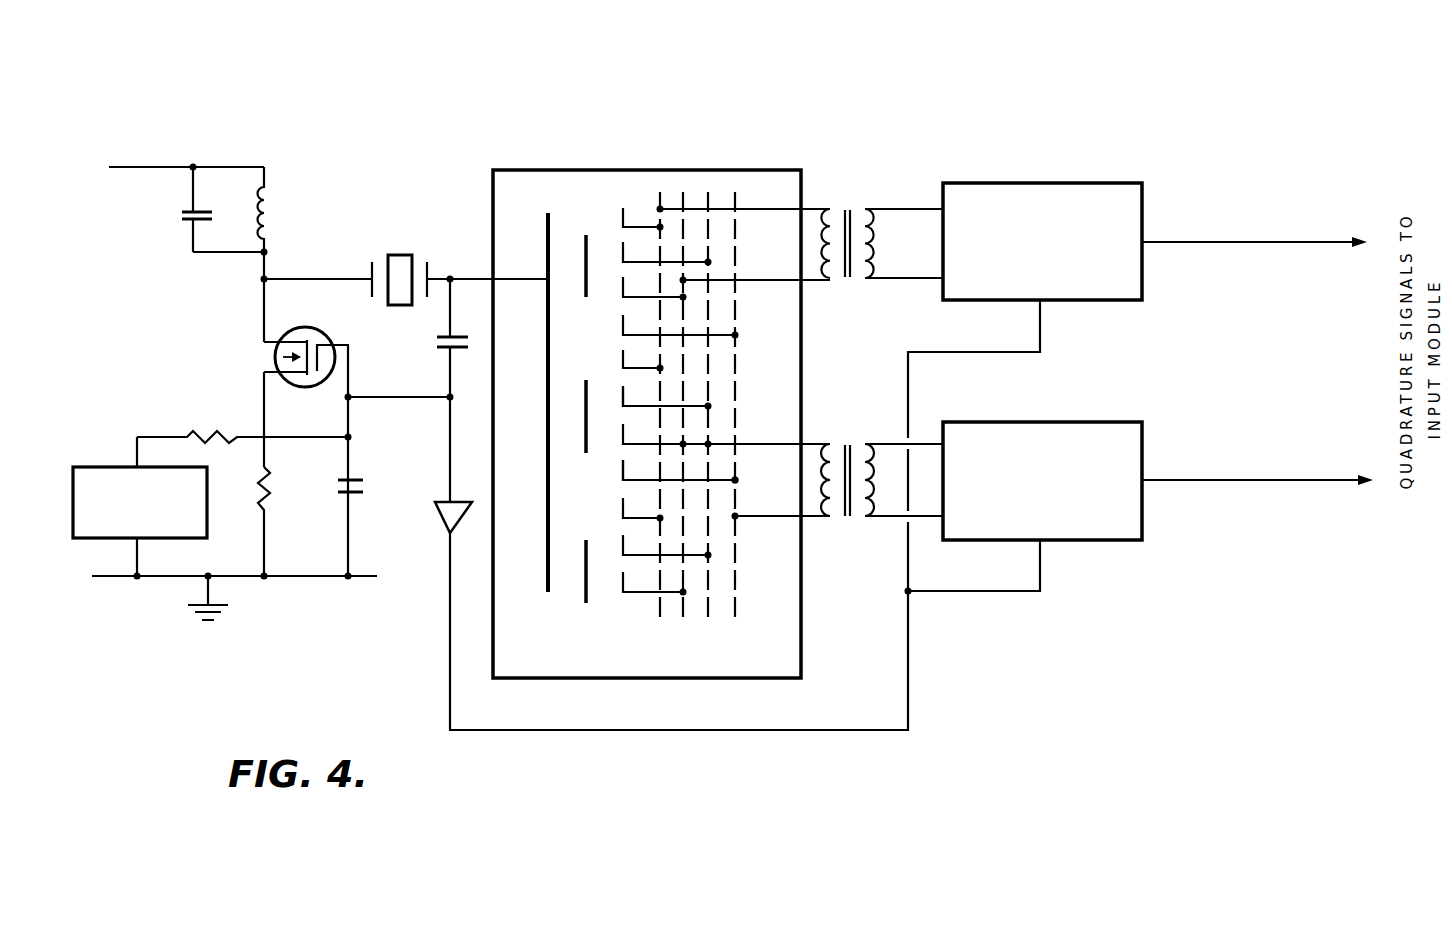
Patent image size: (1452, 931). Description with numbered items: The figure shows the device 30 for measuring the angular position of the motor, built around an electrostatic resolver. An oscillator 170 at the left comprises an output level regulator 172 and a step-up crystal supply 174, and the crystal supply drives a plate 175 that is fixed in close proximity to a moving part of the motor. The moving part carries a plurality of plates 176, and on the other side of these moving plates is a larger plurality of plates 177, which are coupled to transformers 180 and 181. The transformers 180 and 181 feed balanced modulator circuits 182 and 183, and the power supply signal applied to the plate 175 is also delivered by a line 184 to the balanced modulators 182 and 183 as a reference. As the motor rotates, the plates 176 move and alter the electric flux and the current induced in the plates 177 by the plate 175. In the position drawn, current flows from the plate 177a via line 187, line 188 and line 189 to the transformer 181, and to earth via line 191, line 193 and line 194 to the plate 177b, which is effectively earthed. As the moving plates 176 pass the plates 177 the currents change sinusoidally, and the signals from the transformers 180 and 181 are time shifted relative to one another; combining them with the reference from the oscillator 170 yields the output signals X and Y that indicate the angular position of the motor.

The device for measuring the angular position of the motor 30 is at (496, 155).
The oscillator 170 is at (321, 600).
The output level regulator 172 is at (110, 467).
The step-up crystal supply 174 is at (373, 258).
The plate 175 is at (548, 318).
The plates 176 is at (583, 257).
The plates 177 is at (618, 245).
The plate 177a is at (617, 387).
The plate 177b is at (618, 463).
The transformer 180 is at (845, 287).
The transformer 181 is at (845, 522).
The balanced modulator circuit 182 is at (1113, 183).
The balanced modulator circuit 183 is at (1085, 540).
The line 184 is at (450, 660).
The line 187 is at (683, 390).
The line 188 is at (709, 428).
The line 189 is at (748, 442).
The line 191 is at (750, 519).
The line 193 is at (736, 516).
The line 194 is at (733, 478).